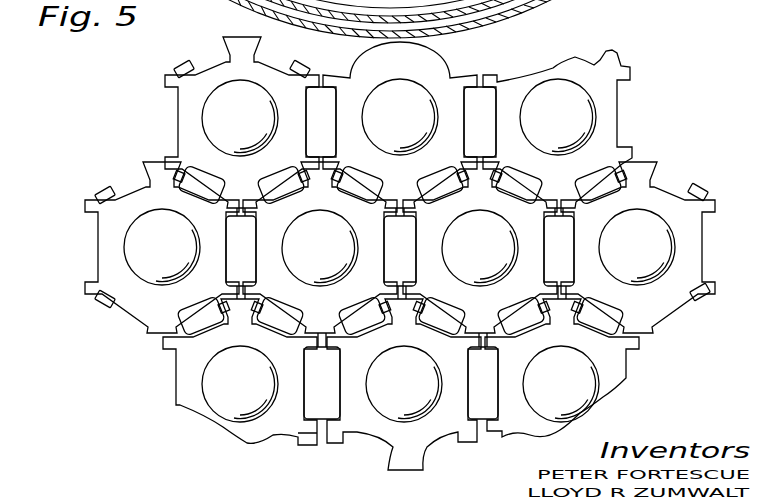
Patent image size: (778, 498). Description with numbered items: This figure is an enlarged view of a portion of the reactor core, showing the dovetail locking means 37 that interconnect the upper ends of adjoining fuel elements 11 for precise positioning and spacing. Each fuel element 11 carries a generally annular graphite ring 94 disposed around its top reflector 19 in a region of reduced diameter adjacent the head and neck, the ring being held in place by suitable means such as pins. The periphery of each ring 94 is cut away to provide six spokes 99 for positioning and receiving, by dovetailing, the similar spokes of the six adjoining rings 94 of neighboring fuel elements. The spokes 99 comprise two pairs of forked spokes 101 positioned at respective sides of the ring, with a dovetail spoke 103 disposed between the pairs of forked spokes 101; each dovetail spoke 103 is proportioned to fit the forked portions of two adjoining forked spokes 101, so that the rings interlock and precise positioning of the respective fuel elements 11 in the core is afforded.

The fuel element 11 is at (238, 122).
The top reflector 19 is at (667, 248).
The dovetail locking means 37 is at (533, 213).
The annular graphite ring 94 is at (187, 103).
The spokes 99 is at (192, 60).
The forked spokes 101 is at (250, 205).
The dovetail spoke 103 is at (400, 150).